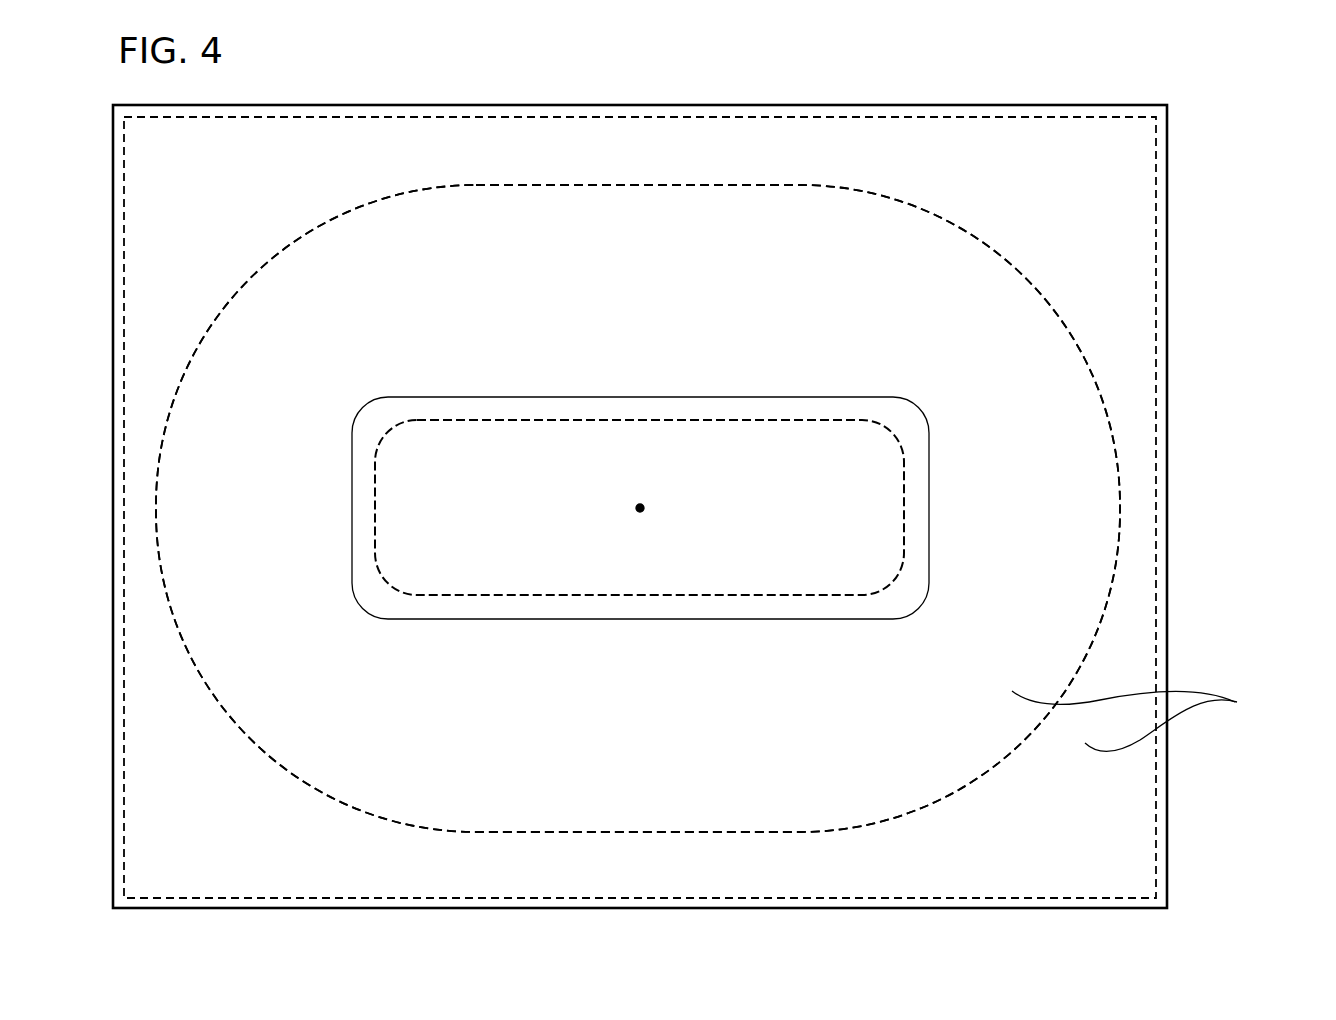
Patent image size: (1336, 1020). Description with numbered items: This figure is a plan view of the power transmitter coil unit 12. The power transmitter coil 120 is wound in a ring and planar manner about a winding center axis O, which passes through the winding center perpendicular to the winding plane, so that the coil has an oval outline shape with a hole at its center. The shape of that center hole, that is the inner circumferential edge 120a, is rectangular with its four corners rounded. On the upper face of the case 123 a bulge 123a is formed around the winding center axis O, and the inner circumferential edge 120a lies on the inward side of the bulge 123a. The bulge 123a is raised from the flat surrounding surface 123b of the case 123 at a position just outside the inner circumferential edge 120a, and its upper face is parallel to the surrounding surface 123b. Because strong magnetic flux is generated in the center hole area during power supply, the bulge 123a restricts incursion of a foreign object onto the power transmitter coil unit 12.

The power transmitter coil unit 12 is at (1186, 245).
The case 123 is at (1158, 387).
The power transmitter coil 120 is at (1088, 558).
The bulge 123a is at (662, 530).
The inner circumferential edge 120a is at (903, 472).
The surrounding surface 123b is at (1154, 720).
The winding center axis O is at (640, 508).